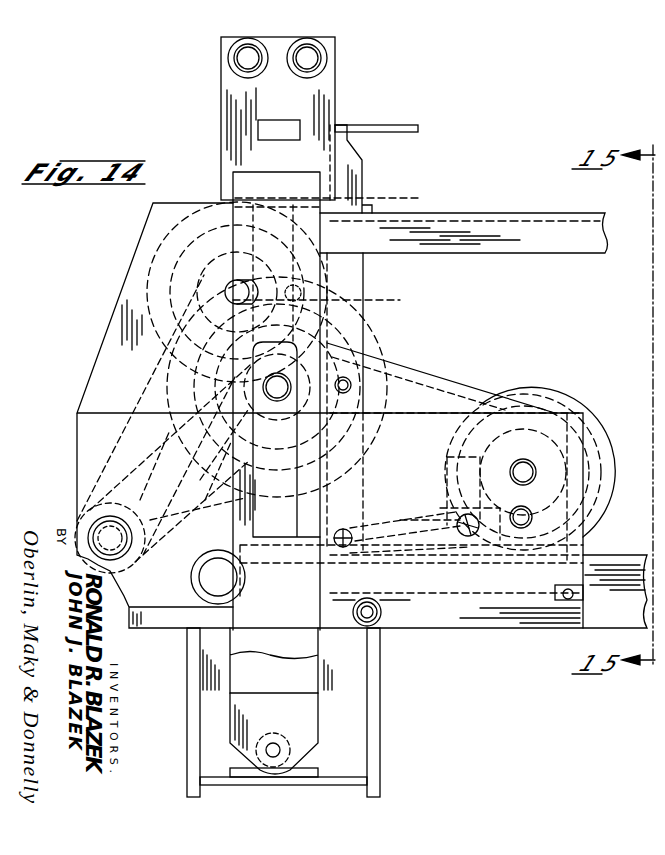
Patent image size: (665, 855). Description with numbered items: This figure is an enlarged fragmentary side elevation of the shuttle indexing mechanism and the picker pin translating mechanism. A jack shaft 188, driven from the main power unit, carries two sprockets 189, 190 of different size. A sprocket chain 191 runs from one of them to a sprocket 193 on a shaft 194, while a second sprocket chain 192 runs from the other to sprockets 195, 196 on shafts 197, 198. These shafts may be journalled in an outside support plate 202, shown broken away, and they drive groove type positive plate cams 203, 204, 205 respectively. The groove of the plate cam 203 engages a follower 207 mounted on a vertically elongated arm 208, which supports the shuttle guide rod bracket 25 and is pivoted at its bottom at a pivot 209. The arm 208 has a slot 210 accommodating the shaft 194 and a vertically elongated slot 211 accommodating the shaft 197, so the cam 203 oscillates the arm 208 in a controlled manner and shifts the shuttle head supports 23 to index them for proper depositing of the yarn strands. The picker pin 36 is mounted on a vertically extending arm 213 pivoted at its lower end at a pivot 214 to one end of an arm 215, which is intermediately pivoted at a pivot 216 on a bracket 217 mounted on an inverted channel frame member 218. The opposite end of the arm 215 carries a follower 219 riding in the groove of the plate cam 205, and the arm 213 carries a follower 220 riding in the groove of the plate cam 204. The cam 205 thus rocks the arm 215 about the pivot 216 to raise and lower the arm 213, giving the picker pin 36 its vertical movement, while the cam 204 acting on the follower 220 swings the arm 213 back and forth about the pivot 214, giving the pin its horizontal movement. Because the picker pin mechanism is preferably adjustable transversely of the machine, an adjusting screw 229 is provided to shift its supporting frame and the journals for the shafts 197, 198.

The shuttle head supports 23 is at (240, 58).
The shuttle guide rod bracket 25 is at (335, 100).
The picker pin 36 is at (412, 118).
The jack shaft 188 is at (78, 520).
The sprocket 189 is at (88, 492).
The sprocket 190 is at (82, 506).
The sprocket chain 191 is at (135, 395).
The sprocket chain 192 is at (158, 452).
The sprocket 193 is at (150, 236).
The shaft 194 is at (228, 292).
The sprocket 195 is at (214, 470).
The sprocket 196 is at (462, 462).
The shaft 197 is at (262, 387).
The shaft 198 is at (530, 452).
The outside support plate 202 is at (357, 680).
The plate cam 203 is at (152, 290).
The plate cam 204 is at (362, 327).
The plate cam 205 is at (602, 455).
The follower 207 is at (300, 297).
The vertically elongated arm 208 is at (300, 178).
The pivot 209 is at (282, 746).
The slot 210 is at (243, 282).
The vertically elongated slot 211 is at (255, 500).
The vertically extending arm 213 is at (356, 277).
The pivot 214 is at (343, 528).
The arm 215 is at (392, 516).
The intermediate pivot 216 is at (462, 534).
The bracket 217 is at (476, 545).
The inverted channel frame member 218 is at (618, 553).
The follower 219 is at (528, 510).
The follower 220 is at (350, 375).
The adjusting screw 229 is at (225, 598).